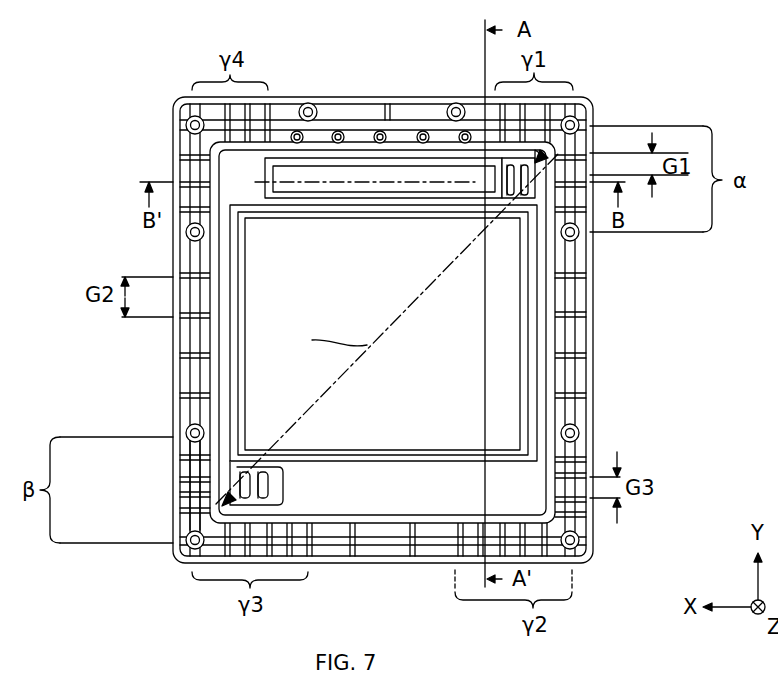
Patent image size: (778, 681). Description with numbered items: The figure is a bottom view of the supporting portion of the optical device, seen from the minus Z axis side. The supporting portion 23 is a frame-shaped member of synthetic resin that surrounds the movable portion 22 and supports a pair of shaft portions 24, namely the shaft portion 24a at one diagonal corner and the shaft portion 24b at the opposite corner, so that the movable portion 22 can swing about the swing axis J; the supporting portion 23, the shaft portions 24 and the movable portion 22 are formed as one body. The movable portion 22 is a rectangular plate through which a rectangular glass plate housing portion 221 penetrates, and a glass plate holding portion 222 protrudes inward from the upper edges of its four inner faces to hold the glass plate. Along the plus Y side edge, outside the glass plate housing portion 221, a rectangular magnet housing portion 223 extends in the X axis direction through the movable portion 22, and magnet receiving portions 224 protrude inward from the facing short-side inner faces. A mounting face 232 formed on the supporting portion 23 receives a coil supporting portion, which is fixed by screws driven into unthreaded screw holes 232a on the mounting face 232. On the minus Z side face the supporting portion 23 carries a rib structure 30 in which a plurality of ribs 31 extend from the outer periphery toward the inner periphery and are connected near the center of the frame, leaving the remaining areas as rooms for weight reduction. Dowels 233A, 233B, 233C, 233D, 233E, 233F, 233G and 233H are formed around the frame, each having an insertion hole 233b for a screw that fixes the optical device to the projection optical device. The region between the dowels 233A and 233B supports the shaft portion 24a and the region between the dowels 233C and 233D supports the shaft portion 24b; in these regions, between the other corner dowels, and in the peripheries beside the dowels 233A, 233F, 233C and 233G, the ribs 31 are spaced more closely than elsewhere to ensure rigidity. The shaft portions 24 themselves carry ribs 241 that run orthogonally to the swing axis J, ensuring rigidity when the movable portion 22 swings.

The movable portion 22 is at (537, 410).
The glass plate housing portion 221 is at (521, 350).
The glass plate holding portion 222 is at (529, 382).
The magnet housing portion 223 is at (379, 189).
The magnet receiving portions 224 is at (296, 176).
The supporting portion 23 is at (175, 344).
The mounting face 232 is at (317, 148).
The screw holes 232a is at (447, 110).
The dowel 233A is at (580, 110).
The dowel 233B is at (580, 241).
The insertion hole 233b is at (568, 276).
The dowel 233C is at (184, 548).
The dowel 233D is at (187, 427).
The dowel 233E is at (580, 425).
The dowel 233F is at (582, 551).
The dowel 233G is at (187, 131).
The dowel 233H is at (187, 239).
The shaft portions 24 is at (438, 276).
The shaft portion 24a is at (542, 122).
The shaft portion 24b is at (226, 506).
The ribs 241 is at (516, 200).
The rib structure 30 is at (187, 507).
The ribs 31 is at (195, 491).